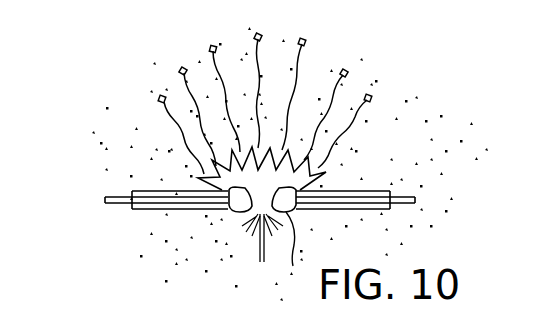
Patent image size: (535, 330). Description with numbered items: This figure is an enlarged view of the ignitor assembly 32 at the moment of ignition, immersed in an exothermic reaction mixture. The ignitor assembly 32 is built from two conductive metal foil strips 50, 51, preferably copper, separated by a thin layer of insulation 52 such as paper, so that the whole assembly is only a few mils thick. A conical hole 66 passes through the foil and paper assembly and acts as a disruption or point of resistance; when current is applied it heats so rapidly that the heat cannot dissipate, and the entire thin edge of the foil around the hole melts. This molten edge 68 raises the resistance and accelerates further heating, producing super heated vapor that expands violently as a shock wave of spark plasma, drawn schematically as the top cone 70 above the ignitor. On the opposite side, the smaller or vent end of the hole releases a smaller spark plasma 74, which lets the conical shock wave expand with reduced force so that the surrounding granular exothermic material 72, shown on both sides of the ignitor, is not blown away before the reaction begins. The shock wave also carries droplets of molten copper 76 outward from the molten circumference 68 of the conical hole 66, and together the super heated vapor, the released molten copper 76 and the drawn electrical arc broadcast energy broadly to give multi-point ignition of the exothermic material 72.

The ignitor assembly 32 is at (90, 203).
The conductive metal foil strip 50 is at (383, 188).
The conductive metal foil strip 51 is at (380, 209).
The layer of insulation 52 is at (412, 198).
The conical hole 66 is at (232, 236).
The molten edge 68 is at (292, 240).
The spark plasma cone 70 is at (352, 160).
The exothermic material 72 is at (396, 81).
The smaller spark plasma 74 is at (257, 252).
The molten copper 76 is at (180, 69).